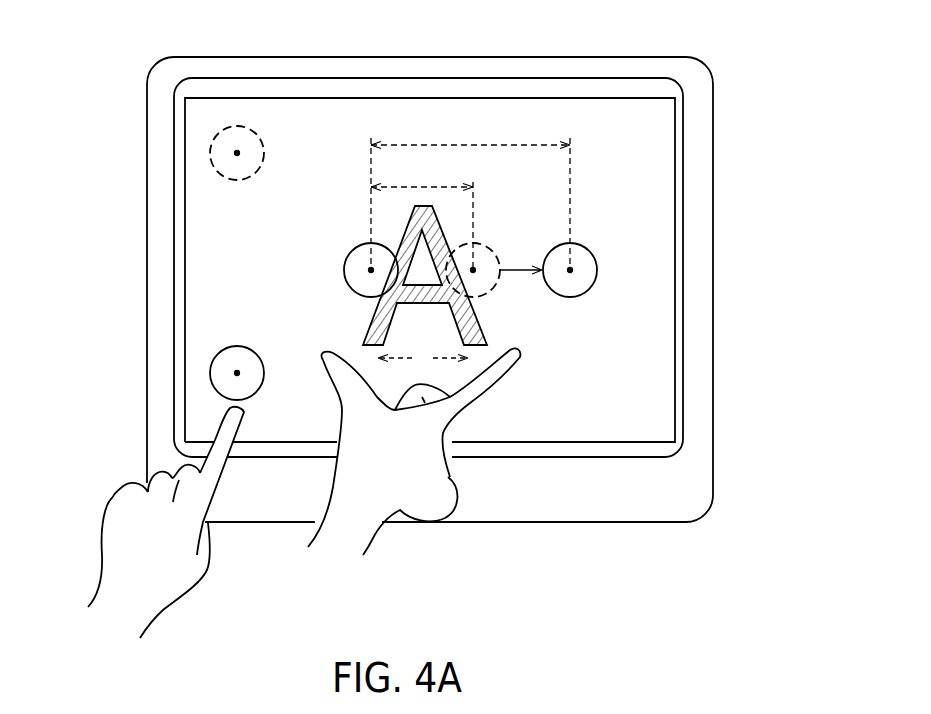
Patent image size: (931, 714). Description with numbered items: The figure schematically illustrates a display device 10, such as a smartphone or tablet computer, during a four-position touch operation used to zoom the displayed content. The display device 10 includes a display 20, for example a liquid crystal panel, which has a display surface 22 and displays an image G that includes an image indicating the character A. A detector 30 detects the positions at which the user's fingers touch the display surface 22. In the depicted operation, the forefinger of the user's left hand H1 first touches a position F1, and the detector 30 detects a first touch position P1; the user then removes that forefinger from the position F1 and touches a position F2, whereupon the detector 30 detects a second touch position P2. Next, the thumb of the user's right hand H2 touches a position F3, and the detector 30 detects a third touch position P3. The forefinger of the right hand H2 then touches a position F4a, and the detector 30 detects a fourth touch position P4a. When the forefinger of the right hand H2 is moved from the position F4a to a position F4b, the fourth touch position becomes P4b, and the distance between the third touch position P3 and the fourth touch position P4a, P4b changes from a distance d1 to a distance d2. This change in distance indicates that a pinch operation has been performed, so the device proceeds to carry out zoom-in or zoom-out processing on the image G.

The display device 10 is at (739, 52).
The display 20 is at (645, 194).
The display surface 22 is at (645, 235).
The detector 30 is at (645, 277).
The image G is at (184, 202).
The position F1 is at (238, 127).
The first touch position P1 is at (236, 153).
The position F2 is at (238, 346).
The second touch position P2 is at (240, 372).
The position F3 is at (356, 249).
The third touch position P3 is at (369, 272).
The position F4a is at (490, 248).
The fourth touch position P4a is at (475, 272).
The position F4b is at (586, 247).
The fourth touch position P4b is at (572, 272).
The distance d1 is at (422, 213).
The distance d2 is at (470, 192).
The left hand H1 is at (130, 530).
The right hand H2 is at (350, 423).